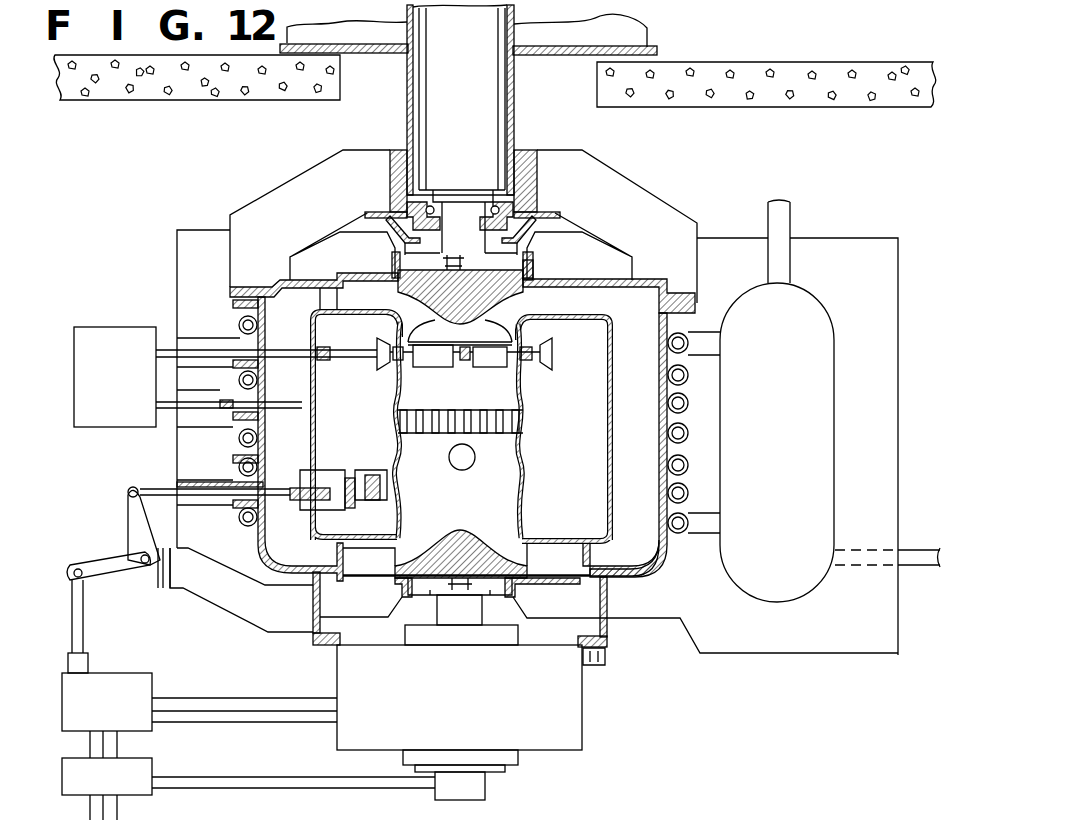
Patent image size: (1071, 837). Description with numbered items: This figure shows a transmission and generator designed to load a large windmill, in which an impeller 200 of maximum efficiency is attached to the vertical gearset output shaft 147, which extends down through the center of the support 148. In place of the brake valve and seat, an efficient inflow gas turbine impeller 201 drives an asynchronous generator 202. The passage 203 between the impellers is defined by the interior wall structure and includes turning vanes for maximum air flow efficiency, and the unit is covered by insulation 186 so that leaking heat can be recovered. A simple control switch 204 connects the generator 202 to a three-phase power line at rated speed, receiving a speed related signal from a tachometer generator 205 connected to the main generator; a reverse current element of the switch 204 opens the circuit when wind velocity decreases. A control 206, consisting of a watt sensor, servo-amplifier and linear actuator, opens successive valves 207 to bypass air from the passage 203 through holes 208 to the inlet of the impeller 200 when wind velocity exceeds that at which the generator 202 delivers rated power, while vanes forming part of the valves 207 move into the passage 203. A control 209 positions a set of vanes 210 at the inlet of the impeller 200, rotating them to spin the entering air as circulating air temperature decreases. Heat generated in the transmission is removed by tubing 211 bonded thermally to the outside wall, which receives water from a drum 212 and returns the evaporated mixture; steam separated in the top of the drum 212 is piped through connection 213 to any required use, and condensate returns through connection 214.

The vertical output shaft 147 is at (600, 10).
The support 148 is at (660, 52).
The insulation 186 is at (840, 632).
The impeller 200 is at (350, 297).
The inflow gas turbine impeller 201 is at (623, 578).
The generator 202 is at (580, 715).
The passage 203 is at (633, 550).
The control switch 204 is at (245, 747).
The tachometer generator 205 is at (485, 788).
The control 206 is at (195, 637).
The valves 207 is at (133, 488).
The holes 208 is at (471, 468).
The control 209 is at (128, 327).
The vanes 210 is at (450, 368).
The tubing 211 is at (688, 458).
The drum 212 is at (836, 388).
The connection 213 is at (792, 207).
The connection 214 is at (942, 568).